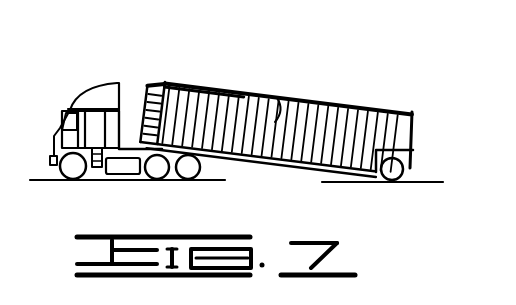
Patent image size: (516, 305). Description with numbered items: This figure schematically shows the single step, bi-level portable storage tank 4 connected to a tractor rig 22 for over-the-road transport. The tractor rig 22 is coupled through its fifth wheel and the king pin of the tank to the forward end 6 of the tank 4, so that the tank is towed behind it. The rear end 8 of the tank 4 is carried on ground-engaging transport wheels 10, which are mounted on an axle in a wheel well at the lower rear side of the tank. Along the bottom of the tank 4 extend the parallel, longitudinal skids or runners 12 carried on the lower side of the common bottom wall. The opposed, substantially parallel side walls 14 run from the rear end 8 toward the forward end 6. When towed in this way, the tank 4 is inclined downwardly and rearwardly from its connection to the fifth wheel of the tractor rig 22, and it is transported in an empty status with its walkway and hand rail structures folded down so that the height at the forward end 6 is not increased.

The tractor rig 22 is at (76, 88).
The bi-level portable storage tank 4 is at (328, 95).
The forward end 6 is at (158, 88).
The side walls 14 is at (278, 98).
The rear end 8 is at (413, 131).
The transport wheels 10 is at (395, 178).
The skids or runners 12 is at (285, 168).